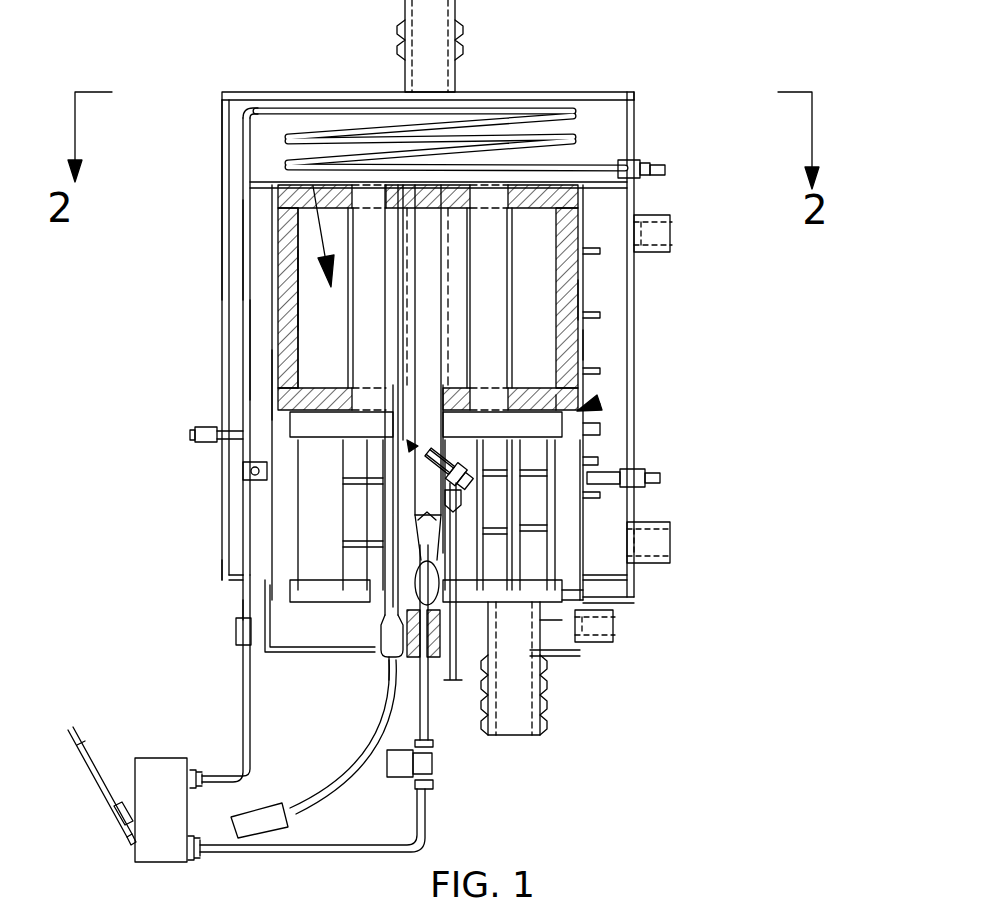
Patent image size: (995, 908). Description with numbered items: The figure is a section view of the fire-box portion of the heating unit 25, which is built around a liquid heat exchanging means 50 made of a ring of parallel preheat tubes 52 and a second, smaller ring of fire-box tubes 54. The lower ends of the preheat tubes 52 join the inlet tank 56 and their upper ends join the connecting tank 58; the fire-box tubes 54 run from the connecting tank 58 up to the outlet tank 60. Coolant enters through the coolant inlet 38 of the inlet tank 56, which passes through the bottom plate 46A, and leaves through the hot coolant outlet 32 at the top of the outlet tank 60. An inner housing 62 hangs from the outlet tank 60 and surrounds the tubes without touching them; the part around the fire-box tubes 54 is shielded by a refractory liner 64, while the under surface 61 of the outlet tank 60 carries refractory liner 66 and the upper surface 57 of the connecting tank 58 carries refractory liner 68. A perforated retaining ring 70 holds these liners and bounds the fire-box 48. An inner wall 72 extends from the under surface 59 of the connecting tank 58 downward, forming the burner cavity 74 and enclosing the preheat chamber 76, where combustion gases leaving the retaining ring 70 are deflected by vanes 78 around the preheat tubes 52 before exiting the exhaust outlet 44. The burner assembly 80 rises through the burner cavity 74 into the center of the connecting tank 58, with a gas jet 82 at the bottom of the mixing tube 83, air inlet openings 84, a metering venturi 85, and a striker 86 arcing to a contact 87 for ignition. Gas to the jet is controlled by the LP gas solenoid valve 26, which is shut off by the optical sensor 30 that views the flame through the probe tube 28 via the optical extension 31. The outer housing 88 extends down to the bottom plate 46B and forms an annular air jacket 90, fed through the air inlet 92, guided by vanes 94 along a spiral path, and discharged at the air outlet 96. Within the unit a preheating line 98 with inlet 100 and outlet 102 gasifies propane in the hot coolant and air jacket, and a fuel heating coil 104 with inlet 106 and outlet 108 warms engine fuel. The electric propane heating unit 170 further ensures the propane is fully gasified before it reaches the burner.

The heating unit 25 is at (705, 100).
The LP gas solenoid valve 26 is at (433, 767).
The probe tube 28 is at (382, 654).
The optical sensor 30 is at (275, 832).
The optical extension 31 is at (350, 790).
The hot coolant outlet 32 is at (457, 43).
The coolant inlet 38 is at (535, 737).
The exhaust outlet 44 is at (613, 638).
The bottom plate 46A is at (244, 686).
The bottom plate 46B is at (612, 583).
The fire-box 48 is at (318, 193).
The liquid heat exchanging means 50 is at (313, 186).
The preheat tubes 52 is at (556, 460).
The fire-box tubes 54 is at (427, 380).
The inlet tank 56 is at (385, 647).
The upper surface 57 is at (277, 377).
The connecting tank 58 is at (288, 420).
The under surface 59 is at (323, 458).
The outlet tank 60 is at (605, 112).
The under surface 61 is at (252, 208).
The inner housing 62 is at (292, 252).
The refractory liner 64 is at (250, 330).
The refractory liner 66 is at (240, 160).
The refractory liner 68 is at (578, 405).
The perforated retaining ring 70 is at (607, 300).
The inner wall 72 is at (282, 292).
The burner cavity 74 is at (565, 590).
The preheat chamber 76 is at (240, 607).
The vanes 78 is at (560, 527).
The burner assembly 80 is at (522, 310).
The gas jet 82 is at (430, 690).
The mixing tube 83 is at (545, 625).
The air inlet openings 84 is at (460, 660).
The metering venturi 85 is at (462, 600).
The striker 86 is at (580, 585).
The contact 87 is at (292, 557).
The outer housing 88 is at (637, 125).
The annular air jacket 90 is at (595, 345).
The air inlet 92 is at (672, 540).
The vanes 94 is at (600, 428).
The air outlet 96 is at (673, 225).
The preheating line 98 is at (340, 105).
The inlet 100 is at (660, 165).
The outlet 102 is at (236, 630).
The fuel heating coil 104 is at (600, 460).
The inlet 106 is at (190, 437).
The outlet 108 is at (660, 478).
The electric propane heating unit 170 is at (165, 865).